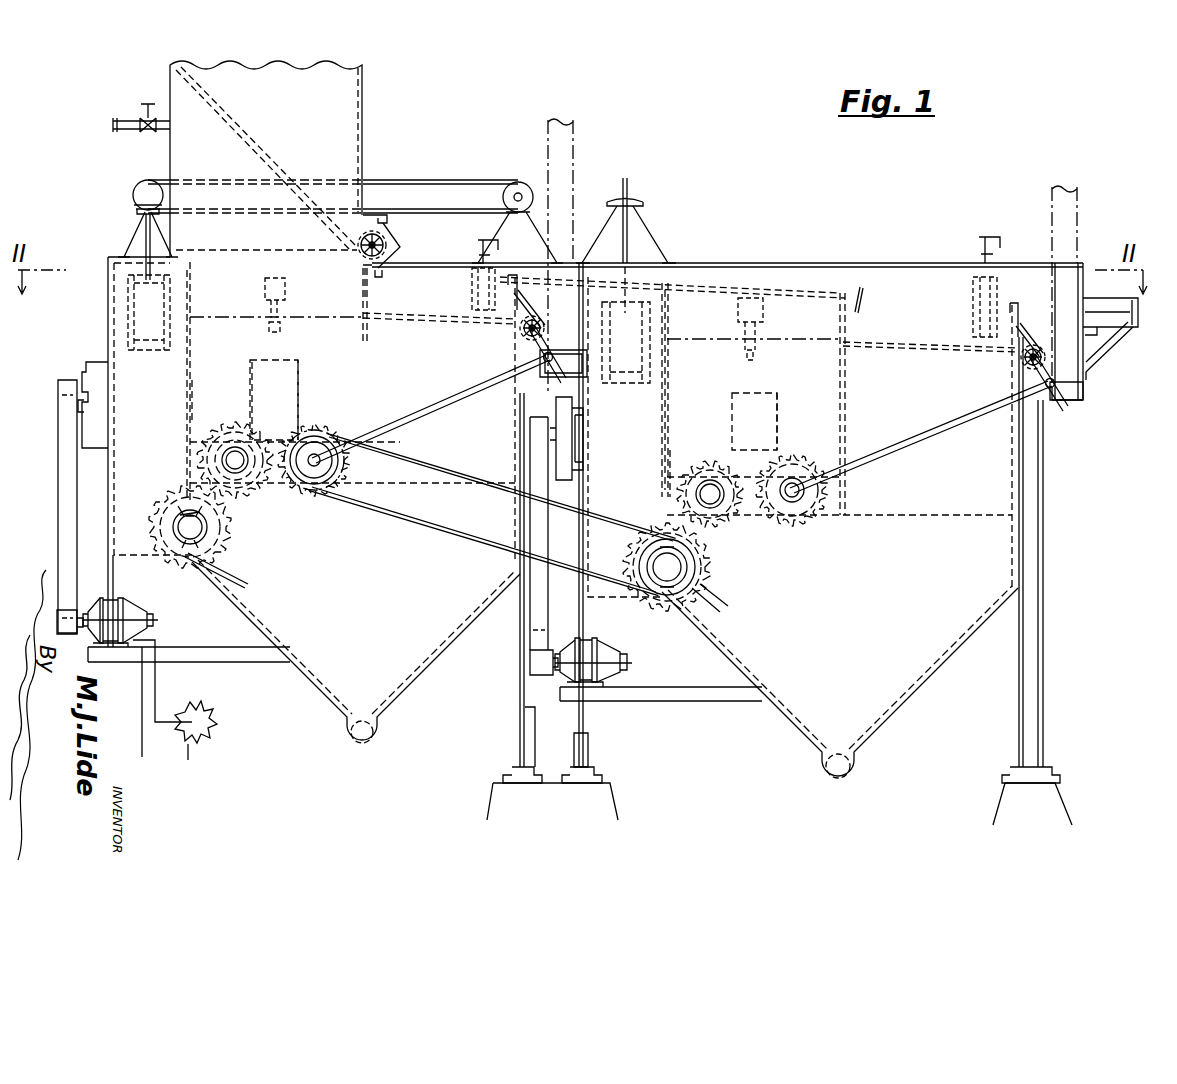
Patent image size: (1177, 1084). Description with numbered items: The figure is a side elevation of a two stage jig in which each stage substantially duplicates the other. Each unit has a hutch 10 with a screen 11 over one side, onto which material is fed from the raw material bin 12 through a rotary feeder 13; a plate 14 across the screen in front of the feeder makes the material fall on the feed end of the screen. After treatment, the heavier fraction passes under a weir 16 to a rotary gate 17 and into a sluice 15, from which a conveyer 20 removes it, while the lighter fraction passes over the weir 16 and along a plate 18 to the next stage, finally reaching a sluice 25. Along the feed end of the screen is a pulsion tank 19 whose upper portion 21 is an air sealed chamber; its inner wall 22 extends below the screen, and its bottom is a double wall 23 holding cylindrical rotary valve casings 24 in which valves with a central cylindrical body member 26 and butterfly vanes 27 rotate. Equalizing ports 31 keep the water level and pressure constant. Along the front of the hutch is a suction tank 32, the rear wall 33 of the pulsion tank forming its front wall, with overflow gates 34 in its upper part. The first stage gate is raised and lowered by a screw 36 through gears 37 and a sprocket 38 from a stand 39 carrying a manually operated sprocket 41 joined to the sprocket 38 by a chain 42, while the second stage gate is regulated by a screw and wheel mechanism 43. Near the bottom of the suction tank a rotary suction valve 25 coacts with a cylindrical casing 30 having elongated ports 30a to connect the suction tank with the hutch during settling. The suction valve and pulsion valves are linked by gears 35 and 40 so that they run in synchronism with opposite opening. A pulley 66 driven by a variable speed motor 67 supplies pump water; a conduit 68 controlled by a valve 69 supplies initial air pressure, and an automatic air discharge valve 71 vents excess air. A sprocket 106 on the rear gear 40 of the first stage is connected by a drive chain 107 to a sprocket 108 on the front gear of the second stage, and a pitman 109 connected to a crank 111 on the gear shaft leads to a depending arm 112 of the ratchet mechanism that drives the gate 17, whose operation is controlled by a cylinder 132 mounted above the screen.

The hutch 10 is at (400, 680).
The screen 11 is at (384, 322).
The raw material bin 12 is at (356, 106).
The rotary feeder 13 is at (386, 244).
The plate 14 is at (381, 274).
The sluice 15 is at (584, 370).
The weir 16 is at (510, 278).
The rotary gate 17 is at (522, 347).
The plate 18 is at (705, 278).
The pulsion tank 19 is at (336, 364).
The conveyer 20 is at (565, 140).
The upper portion (air sealed chamber) 21 is at (262, 251).
The inner wall 22 is at (362, 292).
The double wall 23 is at (250, 487).
The rotary valve casing 24 is at (688, 460).
The rotary suction valve 25 is at (216, 538).
The central cylindrical body member (pulsion valve) 26 is at (243, 426).
The butterfly vanes 27 is at (236, 512).
The cylindrical casing 30 is at (210, 560).
The elongated ports 30a is at (175, 515).
The equalizing ports 31 is at (256, 366).
The suction tank 32 is at (162, 449).
The rear wall 33 is at (190, 403).
The overflow gate 34 is at (144, 313).
The gear 35 is at (240, 584).
The screw 36 is at (142, 237).
The gears 37 is at (134, 209).
The sprocket 38 is at (133, 192).
The stand 39 is at (498, 227).
The gear 40 is at (298, 430).
The manually operated sprocket 41 is at (518, 183).
The chain 42 is at (440, 182).
The screw and wheel mechanism 43 is at (630, 205).
The pulley 66 is at (58, 386).
The variable speed motor 67 is at (138, 612).
The conduit 68 is at (122, 122).
The valve 69 is at (144, 134).
The automatic air discharge valve 71 is at (264, 286).
The sprocket 106 is at (312, 445).
The drive chain 107 is at (460, 528).
The sprocket 108 is at (688, 567).
The pitman 109 is at (438, 404).
The crank 111 is at (340, 466).
The depending arm 112 is at (542, 350).
The cylinder 132 is at (470, 296).